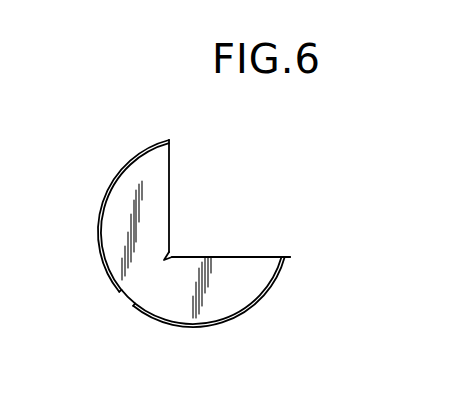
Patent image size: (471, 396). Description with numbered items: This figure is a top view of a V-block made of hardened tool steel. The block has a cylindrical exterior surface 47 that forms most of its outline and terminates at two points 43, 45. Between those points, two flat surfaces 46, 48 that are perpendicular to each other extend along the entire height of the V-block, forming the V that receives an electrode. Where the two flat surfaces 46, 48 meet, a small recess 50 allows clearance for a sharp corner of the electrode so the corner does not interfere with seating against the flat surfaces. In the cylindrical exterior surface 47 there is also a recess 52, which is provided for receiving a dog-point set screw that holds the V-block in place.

The point 43 is at (169, 139).
The point 45 is at (290, 257).
The flat perpendicular surface 46 is at (172, 168).
The cylindrical exterior surface 47 is at (106, 194).
The flat perpendicular surface 48 is at (251, 256).
The recess 50 is at (174, 253).
The recess 52 is at (121, 298).